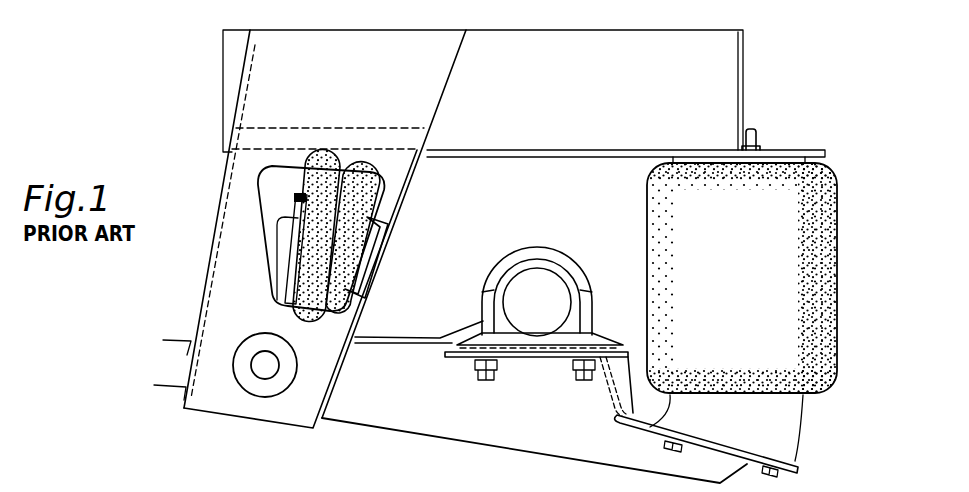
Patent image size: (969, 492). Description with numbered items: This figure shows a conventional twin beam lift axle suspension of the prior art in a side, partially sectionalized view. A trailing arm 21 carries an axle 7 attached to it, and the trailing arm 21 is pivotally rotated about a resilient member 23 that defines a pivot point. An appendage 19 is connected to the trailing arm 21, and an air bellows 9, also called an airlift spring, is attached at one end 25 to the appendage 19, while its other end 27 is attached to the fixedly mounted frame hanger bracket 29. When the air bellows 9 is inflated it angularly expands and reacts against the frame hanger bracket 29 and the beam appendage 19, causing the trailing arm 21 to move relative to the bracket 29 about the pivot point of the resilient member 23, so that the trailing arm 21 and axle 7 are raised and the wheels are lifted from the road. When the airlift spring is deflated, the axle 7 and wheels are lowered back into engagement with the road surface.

The axle 7 is at (543, 276).
The air bellows 9 is at (356, 172).
The appendage 19 is at (266, 253).
The trailing arm 21 is at (398, 417).
The resilient member 23 is at (275, 389).
The one end of air bellows 25 is at (298, 192).
The other end of air bellows 27 is at (382, 185).
The frame hanger bracket 29 is at (212, 306).